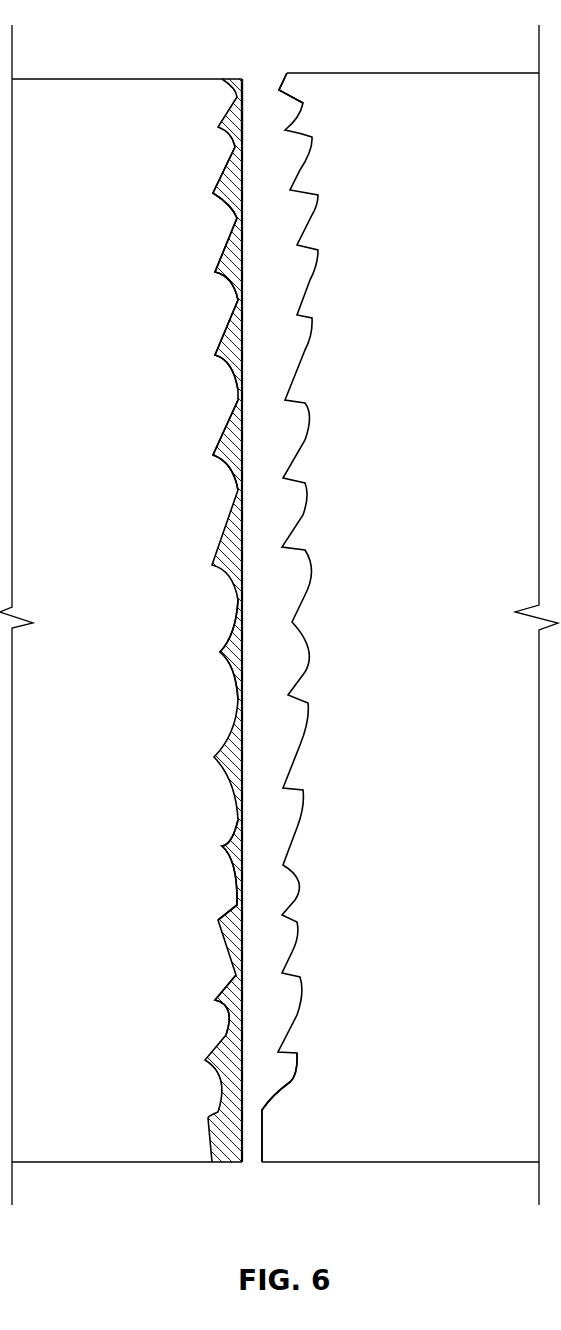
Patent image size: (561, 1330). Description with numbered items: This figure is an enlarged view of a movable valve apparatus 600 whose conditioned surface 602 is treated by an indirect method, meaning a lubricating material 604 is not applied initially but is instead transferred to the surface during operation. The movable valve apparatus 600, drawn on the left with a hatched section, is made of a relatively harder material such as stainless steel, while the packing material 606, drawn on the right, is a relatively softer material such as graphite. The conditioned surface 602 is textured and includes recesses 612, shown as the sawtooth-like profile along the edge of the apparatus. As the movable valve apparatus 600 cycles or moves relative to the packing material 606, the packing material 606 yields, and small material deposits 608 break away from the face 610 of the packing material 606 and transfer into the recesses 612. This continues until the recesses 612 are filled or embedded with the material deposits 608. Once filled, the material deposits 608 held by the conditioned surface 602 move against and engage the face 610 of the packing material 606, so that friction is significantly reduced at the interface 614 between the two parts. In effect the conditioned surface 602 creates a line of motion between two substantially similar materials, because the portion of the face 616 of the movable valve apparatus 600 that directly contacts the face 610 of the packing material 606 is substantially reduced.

The movable valve apparatus 600 is at (150, 79).
The conditioned surface 602 is at (128, 534).
The lubricating material 604 is at (215, 277).
The packing material 606 is at (440, 73).
The material deposits 608 is at (214, 198).
The face 610 is at (293, 1080).
The recesses 612 is at (215, 357).
The interface 614 is at (264, 68).
The face 616 is at (237, 906).